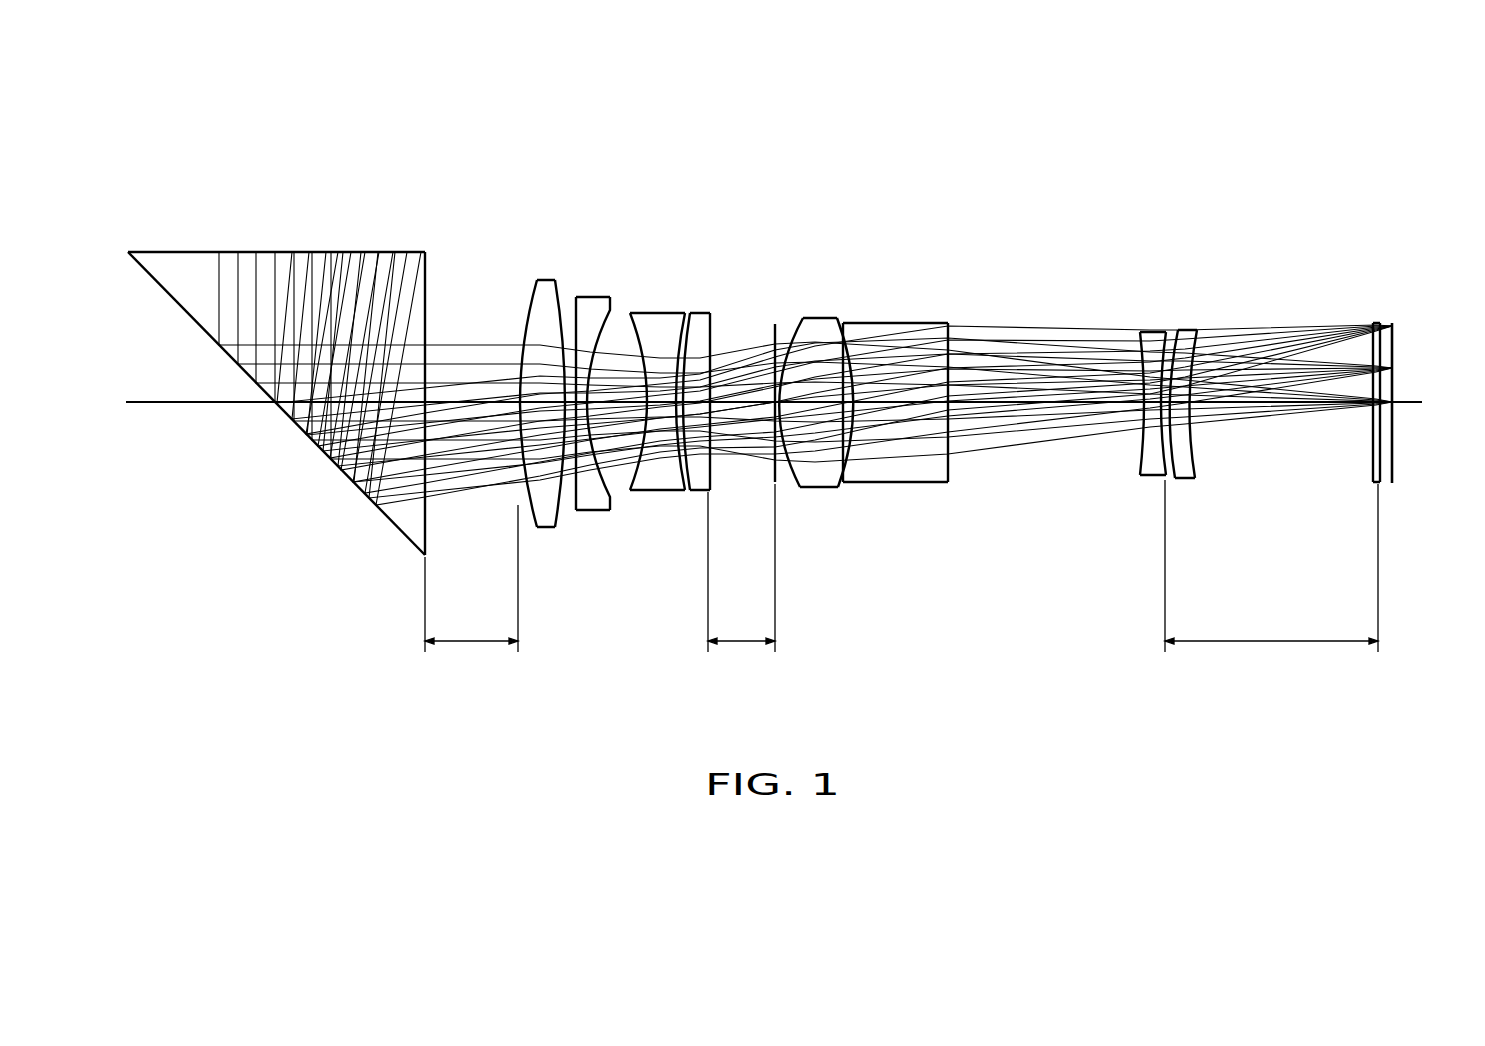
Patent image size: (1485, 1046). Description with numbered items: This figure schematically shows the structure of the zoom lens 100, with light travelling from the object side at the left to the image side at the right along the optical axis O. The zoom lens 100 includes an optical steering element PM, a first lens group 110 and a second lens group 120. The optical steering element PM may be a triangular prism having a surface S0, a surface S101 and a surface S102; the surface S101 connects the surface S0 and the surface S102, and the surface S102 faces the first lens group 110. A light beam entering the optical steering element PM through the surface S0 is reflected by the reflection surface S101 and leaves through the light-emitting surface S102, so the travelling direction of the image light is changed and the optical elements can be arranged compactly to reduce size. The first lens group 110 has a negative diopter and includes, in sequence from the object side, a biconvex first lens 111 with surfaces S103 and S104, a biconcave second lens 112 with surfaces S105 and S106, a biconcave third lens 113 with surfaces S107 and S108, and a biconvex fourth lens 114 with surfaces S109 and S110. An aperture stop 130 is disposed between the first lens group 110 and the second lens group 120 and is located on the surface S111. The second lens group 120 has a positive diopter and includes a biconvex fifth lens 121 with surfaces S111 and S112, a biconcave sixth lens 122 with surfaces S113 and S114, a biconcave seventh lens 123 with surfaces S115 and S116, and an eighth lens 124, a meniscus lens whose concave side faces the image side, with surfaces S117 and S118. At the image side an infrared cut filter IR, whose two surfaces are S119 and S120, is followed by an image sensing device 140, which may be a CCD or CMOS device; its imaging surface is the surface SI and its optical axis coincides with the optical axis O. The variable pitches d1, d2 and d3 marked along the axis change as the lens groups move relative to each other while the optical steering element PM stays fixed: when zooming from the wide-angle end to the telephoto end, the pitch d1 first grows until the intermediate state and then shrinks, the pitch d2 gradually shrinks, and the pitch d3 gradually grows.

The zoom lens 100 is at (1415, 746).
The optical axis O is at (214, 406).
The optical steering element PM is at (312, 363).
The surface S0 is at (338, 251).
The surface S101 is at (179, 300).
The surface S102 is at (428, 283).
The first lens group 110 is at (723, 178).
The first lens 111 is at (535, 402).
The second lens 112 is at (600, 402).
The third lens 113 is at (681, 395).
The fourth lens 114 is at (715, 375).
The aperture stop 130 is at (770, 330).
The second lens group 120 is at (1217, 194).
The fifth lens 121 is at (841, 401).
The sixth lens 122 is at (896, 383).
The seventh lens 123 is at (1162, 390).
The eighth lens 124 is at (1195, 367).
The infrared cut filter IR is at (1376, 398).
The surface SI is at (1401, 348).
The image sensing device 140 is at (1398, 335).
The surface S103 is at (524, 508).
The surface S104 is at (562, 512).
The surface S105 is at (572, 500).
The surface S106 is at (606, 494).
The surface S107 is at (632, 472).
The surface S108 is at (684, 488).
The surface S109 is at (688, 485).
The surface S110 is at (712, 482).
The surface S111 is at (794, 482).
The surface S112 is at (848, 484).
The surface S113 is at (841, 462).
The surface S114 is at (950, 472).
The surface S115 is at (1138, 462).
The surface S116 is at (1168, 462).
The surface S117 is at (1168, 445).
The surface S118 is at (1198, 444).
The surface S119 is at (1371, 457).
The surface S120 is at (1383, 457).
The variable pitch d1 is at (471, 578).
The variable pitch d2 is at (741, 568).
The variable pitch d3 is at (1271, 566).